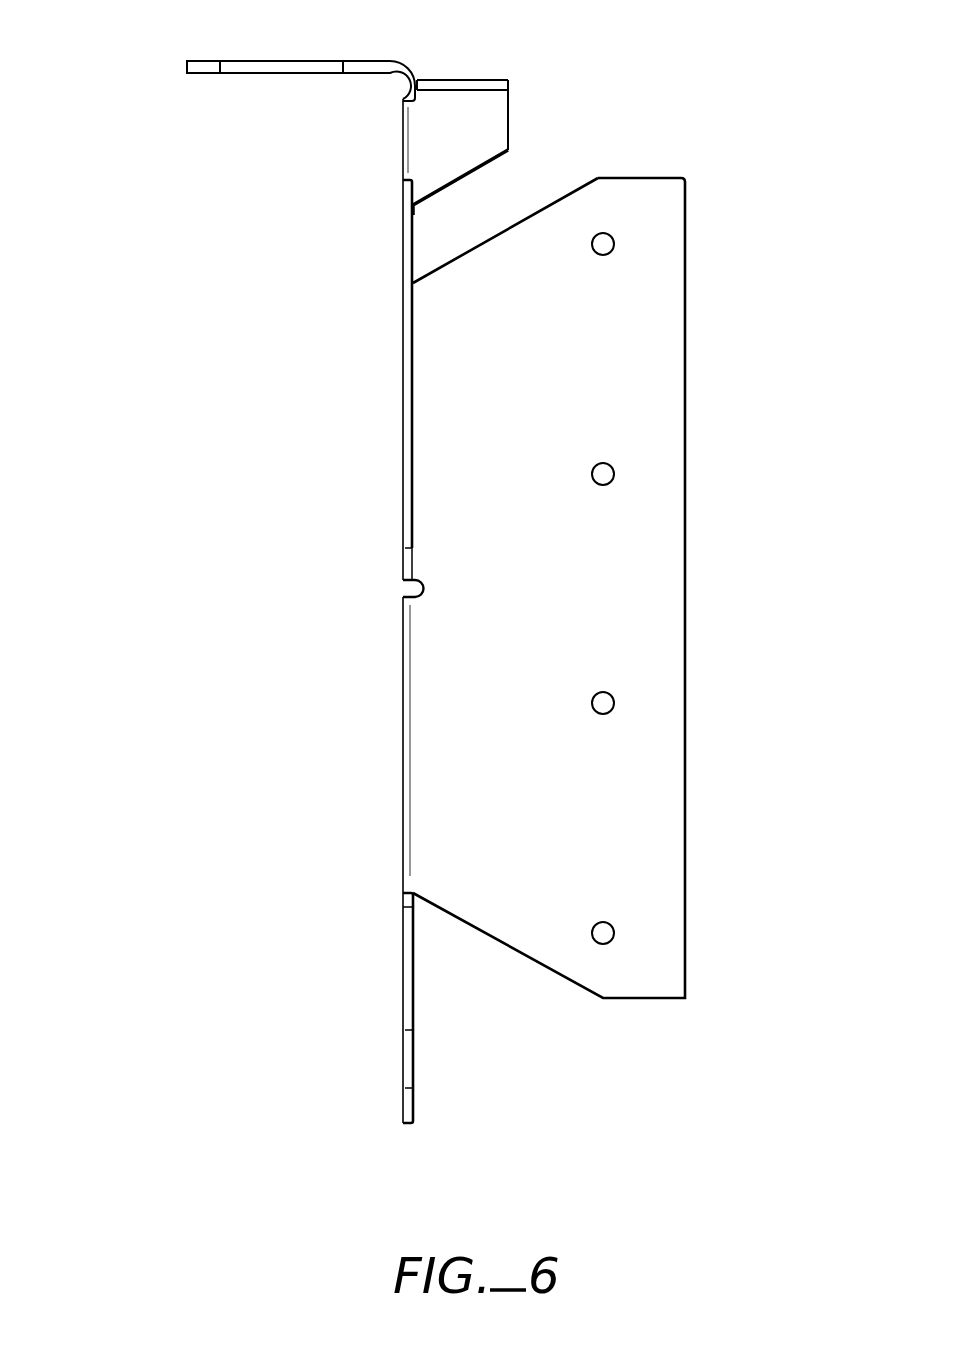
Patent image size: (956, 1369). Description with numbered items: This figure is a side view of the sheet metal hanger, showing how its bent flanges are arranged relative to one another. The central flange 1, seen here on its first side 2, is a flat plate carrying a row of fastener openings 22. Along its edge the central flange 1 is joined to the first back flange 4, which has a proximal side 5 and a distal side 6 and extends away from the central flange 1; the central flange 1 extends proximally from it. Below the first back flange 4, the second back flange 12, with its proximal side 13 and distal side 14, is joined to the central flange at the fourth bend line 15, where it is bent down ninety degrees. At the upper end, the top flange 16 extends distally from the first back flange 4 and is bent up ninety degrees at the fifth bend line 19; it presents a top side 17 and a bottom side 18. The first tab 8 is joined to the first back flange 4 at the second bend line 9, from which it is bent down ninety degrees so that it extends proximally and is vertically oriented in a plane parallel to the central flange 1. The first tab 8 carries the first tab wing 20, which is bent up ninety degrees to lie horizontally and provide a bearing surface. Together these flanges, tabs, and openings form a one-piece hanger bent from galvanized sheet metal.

The central flange 1 is at (600, 588).
The first side 2 is at (655, 338).
The first back flange 4 is at (414, 348).
The proximal side 5 is at (415, 378).
The distal side 6 is at (400, 428).
The first tab 8 is at (490, 127).
The second bend line 9 is at (405, 142).
The second back flange 12 is at (423, 1008).
The proximal side 13 is at (415, 965).
The distal side 14 is at (402, 945).
The fourth bend line 15 is at (410, 705).
The top flange 16 is at (270, 60).
The top side 17 is at (270, 71).
The bottom side 18 is at (208, 75).
The fifth bend line 19 is at (397, 78).
The first tab wing 20 is at (472, 78).
The fastener openings 22 is at (685, 249).